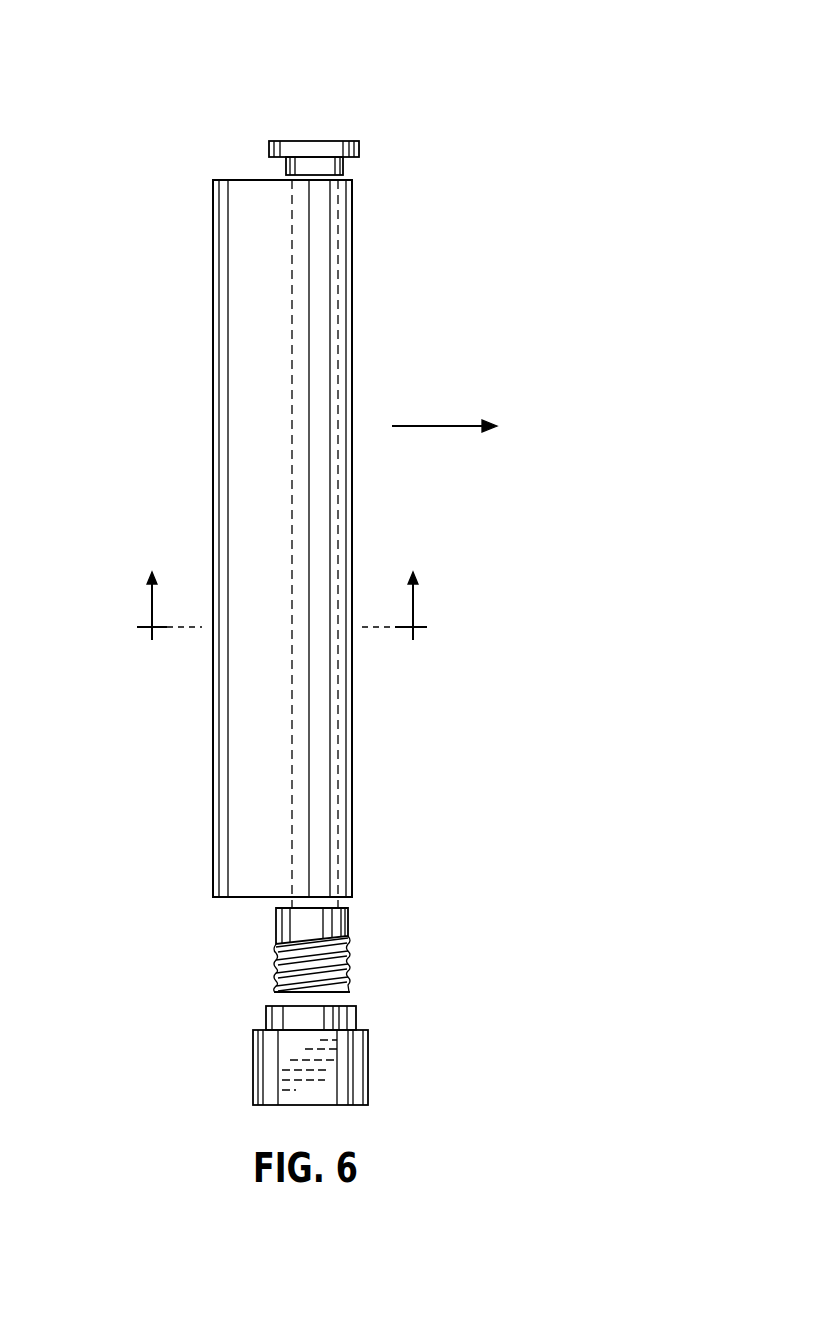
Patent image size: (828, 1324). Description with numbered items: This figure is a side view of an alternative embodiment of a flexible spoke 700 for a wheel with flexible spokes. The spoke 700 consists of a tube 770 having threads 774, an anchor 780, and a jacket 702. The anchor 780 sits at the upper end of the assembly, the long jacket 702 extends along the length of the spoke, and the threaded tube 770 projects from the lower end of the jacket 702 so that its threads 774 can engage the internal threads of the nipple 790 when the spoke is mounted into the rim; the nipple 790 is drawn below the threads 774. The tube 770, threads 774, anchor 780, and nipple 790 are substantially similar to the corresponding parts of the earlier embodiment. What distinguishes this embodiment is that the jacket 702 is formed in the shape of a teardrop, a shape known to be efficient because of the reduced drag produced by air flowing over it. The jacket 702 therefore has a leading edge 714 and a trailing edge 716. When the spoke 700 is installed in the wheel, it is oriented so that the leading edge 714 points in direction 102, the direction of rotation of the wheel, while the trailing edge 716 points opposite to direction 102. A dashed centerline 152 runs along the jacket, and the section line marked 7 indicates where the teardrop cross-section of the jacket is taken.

The flexible spoke 700 is at (191, 85).
The jacket 702 is at (218, 383).
The leading edge 714 is at (353, 280).
The trailing edge 716 is at (218, 462).
The central passage 152 is at (315, 535).
The direction 102 is at (437, 425).
The section line 7- 7 is at (283, 617).
The anchor 780 is at (359, 147).
The tube 770 is at (276, 935).
The threads 774 is at (349, 955).
The nipple 790 is at (368, 1063).